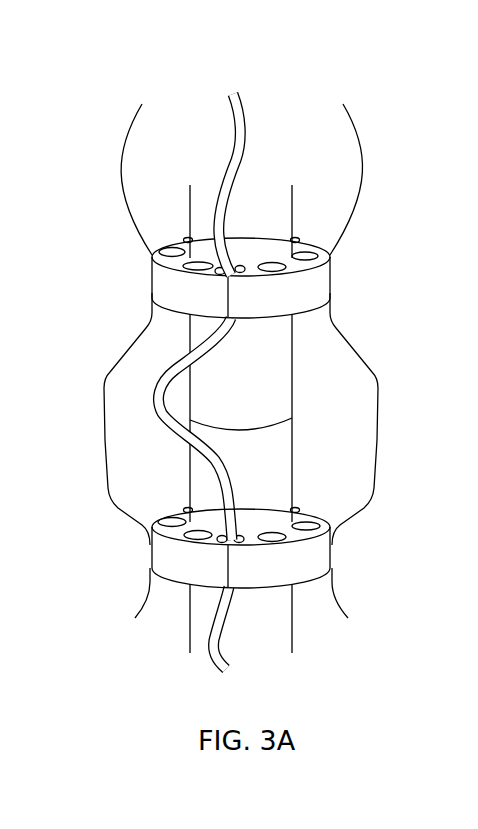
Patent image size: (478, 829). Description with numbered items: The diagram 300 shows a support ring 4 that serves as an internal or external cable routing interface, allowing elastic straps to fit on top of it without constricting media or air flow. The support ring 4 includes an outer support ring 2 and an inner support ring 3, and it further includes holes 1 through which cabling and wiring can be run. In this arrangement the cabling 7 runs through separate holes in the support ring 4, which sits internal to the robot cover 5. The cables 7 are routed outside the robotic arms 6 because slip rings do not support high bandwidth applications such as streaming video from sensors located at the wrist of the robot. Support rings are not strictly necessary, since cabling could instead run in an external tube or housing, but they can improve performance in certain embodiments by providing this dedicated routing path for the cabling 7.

The diagram 300 is at (237, 368).
The holes 1 is at (233, 273).
The outer support ring 2 is at (177, 242).
The inner support ring 3 is at (155, 293).
The support ring 4 is at (327, 292).
The robot cover 5 is at (357, 488).
The robotic arms 6 is at (285, 408).
The cabling 7 is at (210, 453).